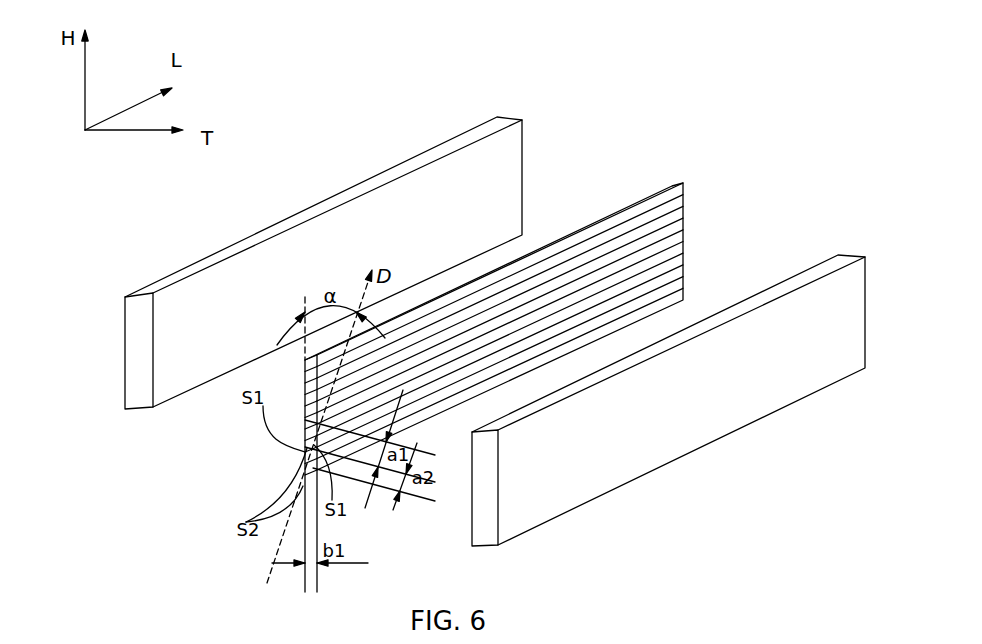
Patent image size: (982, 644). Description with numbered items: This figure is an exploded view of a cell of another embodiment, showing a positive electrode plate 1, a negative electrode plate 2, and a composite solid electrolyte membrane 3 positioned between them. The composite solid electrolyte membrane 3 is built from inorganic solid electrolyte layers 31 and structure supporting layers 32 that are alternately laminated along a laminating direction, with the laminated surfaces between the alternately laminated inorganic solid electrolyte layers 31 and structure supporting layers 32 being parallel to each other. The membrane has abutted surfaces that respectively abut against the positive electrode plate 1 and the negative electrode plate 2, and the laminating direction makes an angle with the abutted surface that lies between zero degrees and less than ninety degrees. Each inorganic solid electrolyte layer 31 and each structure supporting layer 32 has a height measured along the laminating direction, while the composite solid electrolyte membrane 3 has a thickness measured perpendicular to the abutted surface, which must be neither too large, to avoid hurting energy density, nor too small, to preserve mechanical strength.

The positive electrode plate 1 is at (318, 198).
The negative electrode plate 2 is at (743, 477).
The composite solid electrolyte membrane 3 is at (527, 295).
The inorganic solid electrolyte layer 31 is at (680, 288).
The structure supporting layer 32 is at (555, 250).